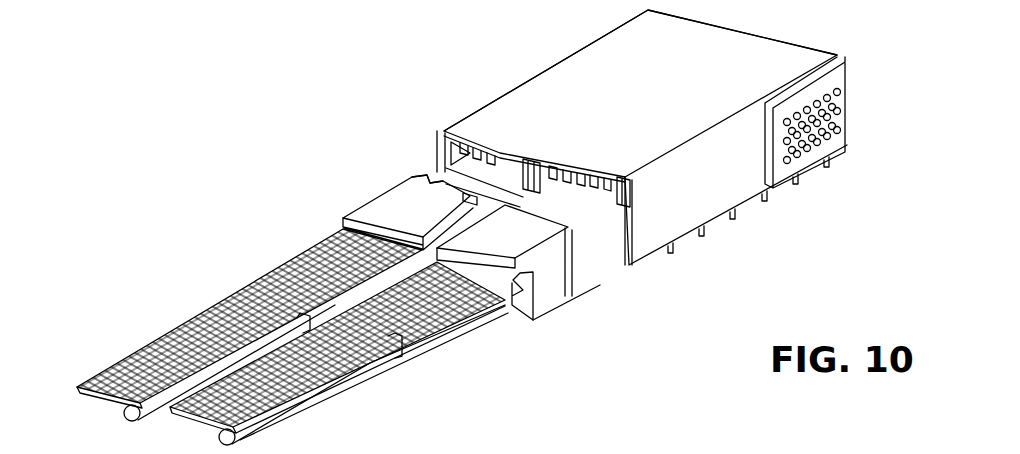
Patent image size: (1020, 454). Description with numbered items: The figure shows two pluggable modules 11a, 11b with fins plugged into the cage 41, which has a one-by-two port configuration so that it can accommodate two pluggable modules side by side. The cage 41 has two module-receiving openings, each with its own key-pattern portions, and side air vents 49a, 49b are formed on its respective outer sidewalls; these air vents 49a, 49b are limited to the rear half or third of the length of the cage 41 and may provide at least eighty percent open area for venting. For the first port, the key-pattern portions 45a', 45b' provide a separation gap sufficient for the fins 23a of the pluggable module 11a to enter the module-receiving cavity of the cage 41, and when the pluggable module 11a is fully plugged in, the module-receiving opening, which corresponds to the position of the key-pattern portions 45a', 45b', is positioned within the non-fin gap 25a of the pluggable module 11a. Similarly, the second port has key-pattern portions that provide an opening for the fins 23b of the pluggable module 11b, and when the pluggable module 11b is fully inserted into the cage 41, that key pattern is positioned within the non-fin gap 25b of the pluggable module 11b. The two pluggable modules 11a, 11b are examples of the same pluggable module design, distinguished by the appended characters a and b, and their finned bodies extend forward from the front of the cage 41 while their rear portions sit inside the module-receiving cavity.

The cage 41 is at (511, 57).
The side air vent 49a is at (585, 42).
The side air vent 49b is at (846, 106).
The fins 23a is at (446, 131).
The fins 23b is at (608, 153).
The key-pattern portion 45a' is at (429, 131).
The key-pattern portion 45b' is at (516, 153).
The non-fin gap 25a is at (455, 178).
The non-fin gap 25b is at (617, 203).
The pluggable module 11a is at (371, 184).
The pluggable module 11b is at (562, 322).